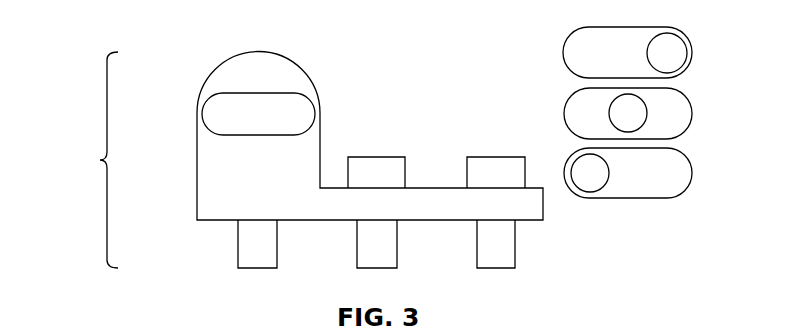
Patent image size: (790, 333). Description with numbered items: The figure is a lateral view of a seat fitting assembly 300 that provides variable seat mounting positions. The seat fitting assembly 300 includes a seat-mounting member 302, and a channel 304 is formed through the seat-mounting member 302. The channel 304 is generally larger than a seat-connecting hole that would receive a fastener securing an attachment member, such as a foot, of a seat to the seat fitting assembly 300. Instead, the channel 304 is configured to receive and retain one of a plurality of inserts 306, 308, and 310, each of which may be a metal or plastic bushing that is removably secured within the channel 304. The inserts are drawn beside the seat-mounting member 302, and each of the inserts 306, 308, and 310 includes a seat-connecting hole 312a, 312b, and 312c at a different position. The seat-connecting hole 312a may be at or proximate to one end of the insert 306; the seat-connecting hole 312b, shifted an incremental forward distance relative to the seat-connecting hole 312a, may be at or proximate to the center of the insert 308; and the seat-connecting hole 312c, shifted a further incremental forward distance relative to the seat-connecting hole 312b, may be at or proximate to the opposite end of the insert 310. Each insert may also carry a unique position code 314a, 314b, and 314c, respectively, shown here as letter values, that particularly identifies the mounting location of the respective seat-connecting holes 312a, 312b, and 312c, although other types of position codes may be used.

The seat fitting assembly 300 is at (87, 160).
The seat-mounting member 302 is at (197, 170).
The channel 304 is at (292, 116).
The insert 306 is at (680, 33).
The insert 308 is at (680, 91).
The insert 310 is at (680, 150).
The seat-connecting hole 312a is at (676, 53).
The seat-connecting hole 312b is at (637, 114).
The seat-connecting hole 312c is at (590, 185).
The position code 314a is at (580, 52).
The position code 314b is at (580, 113).
The position code 314c is at (678, 176).